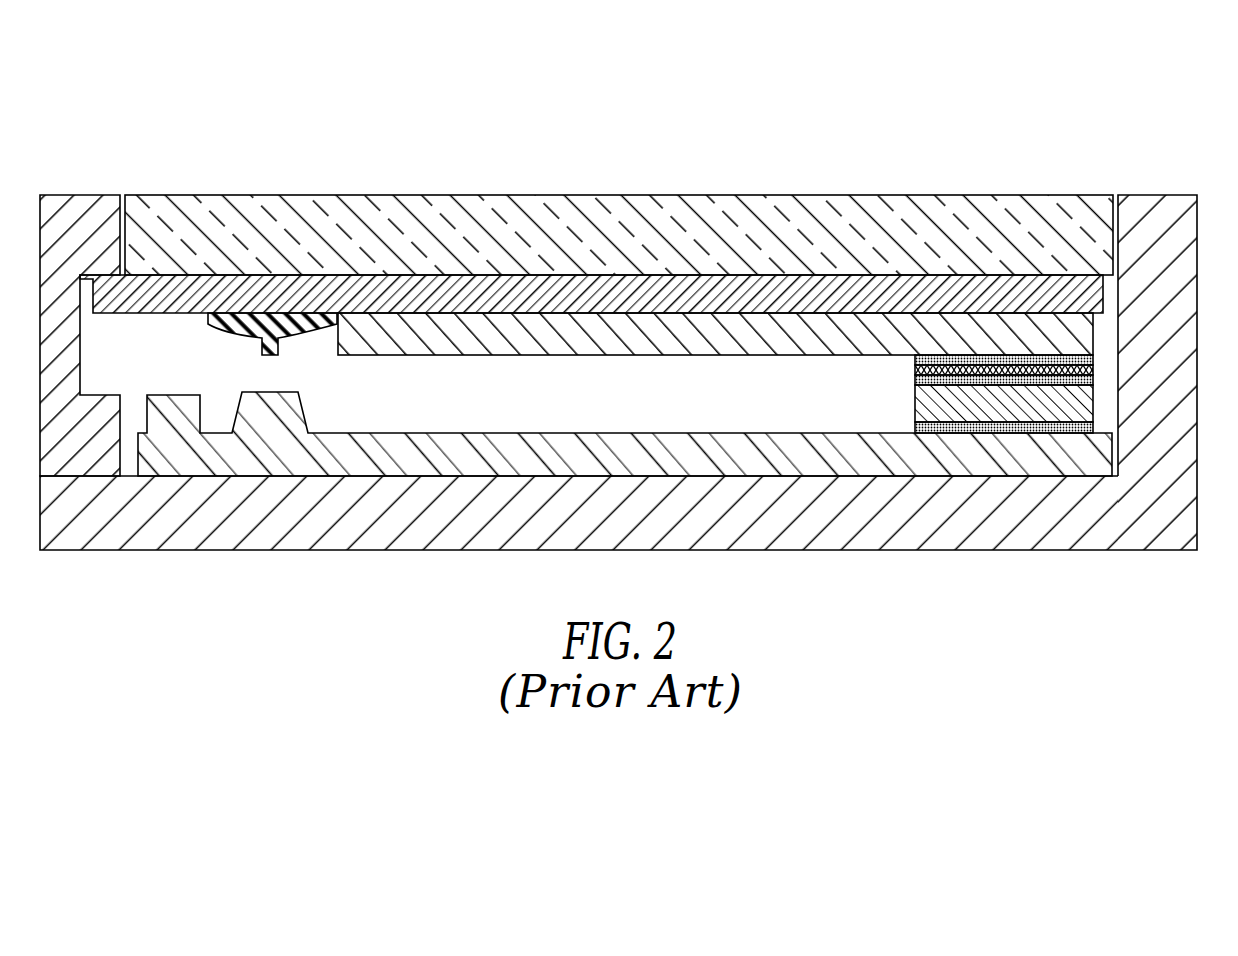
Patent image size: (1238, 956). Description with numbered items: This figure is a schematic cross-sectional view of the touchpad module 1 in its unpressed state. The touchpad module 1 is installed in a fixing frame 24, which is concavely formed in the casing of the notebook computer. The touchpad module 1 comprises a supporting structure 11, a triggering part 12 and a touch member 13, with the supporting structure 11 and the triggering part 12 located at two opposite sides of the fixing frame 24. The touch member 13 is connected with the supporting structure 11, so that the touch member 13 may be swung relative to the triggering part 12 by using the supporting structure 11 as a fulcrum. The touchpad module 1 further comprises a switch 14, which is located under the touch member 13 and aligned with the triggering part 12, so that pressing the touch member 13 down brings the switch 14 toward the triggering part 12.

The touchpad module 1 is at (1095, 96).
The fixing frame 24 is at (81, 210).
The touch member 13 is at (936, 292).
The switch 14 is at (267, 322).
The triggering part 12 is at (305, 413).
The supporting structure 11 is at (1000, 407).